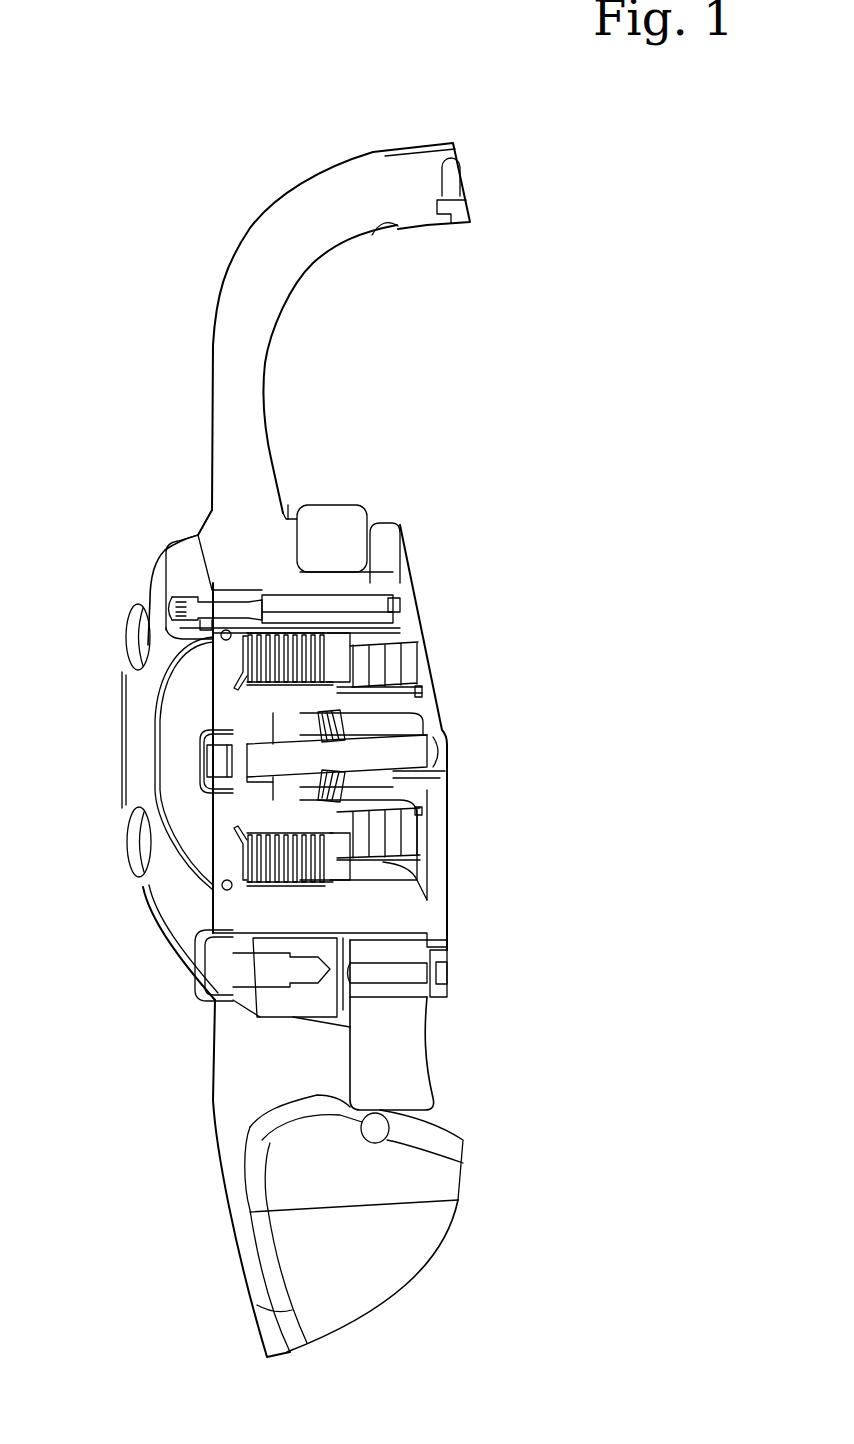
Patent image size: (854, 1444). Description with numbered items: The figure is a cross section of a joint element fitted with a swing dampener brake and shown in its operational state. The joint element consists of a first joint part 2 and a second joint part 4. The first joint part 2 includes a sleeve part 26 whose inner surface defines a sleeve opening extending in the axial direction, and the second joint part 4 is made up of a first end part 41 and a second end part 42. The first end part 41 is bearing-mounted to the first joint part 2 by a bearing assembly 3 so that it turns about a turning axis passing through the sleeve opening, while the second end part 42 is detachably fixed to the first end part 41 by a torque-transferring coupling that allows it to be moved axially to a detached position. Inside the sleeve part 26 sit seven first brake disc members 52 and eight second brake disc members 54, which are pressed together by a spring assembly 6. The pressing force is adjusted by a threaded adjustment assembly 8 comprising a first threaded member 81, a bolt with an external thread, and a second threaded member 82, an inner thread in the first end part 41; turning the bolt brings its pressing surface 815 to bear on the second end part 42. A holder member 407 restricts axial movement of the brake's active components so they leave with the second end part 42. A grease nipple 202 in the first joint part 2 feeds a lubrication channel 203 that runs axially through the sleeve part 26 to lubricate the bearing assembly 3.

The first joint part 2 is at (209, 474).
The bearing assembly 3 is at (288, 515).
The second joint part 4 is at (334, 500).
The grease nipple 202 is at (176, 605).
The sleeve part 26 is at (392, 588).
The lubrication channel 203 is at (401, 607).
The first brake disc members 52 is at (318, 625).
The second brake disc members 54 is at (323, 681).
The spring assembly 6 is at (424, 660).
The holder member 407 is at (421, 684).
The first end part 41 is at (445, 712).
The second end part 42 is at (155, 714).
The threaded adjustment assembly 8 is at (197, 737).
The first threaded member 81 is at (200, 761).
The pressing surface 815 is at (249, 785).
The second threaded member 82 is at (396, 777).